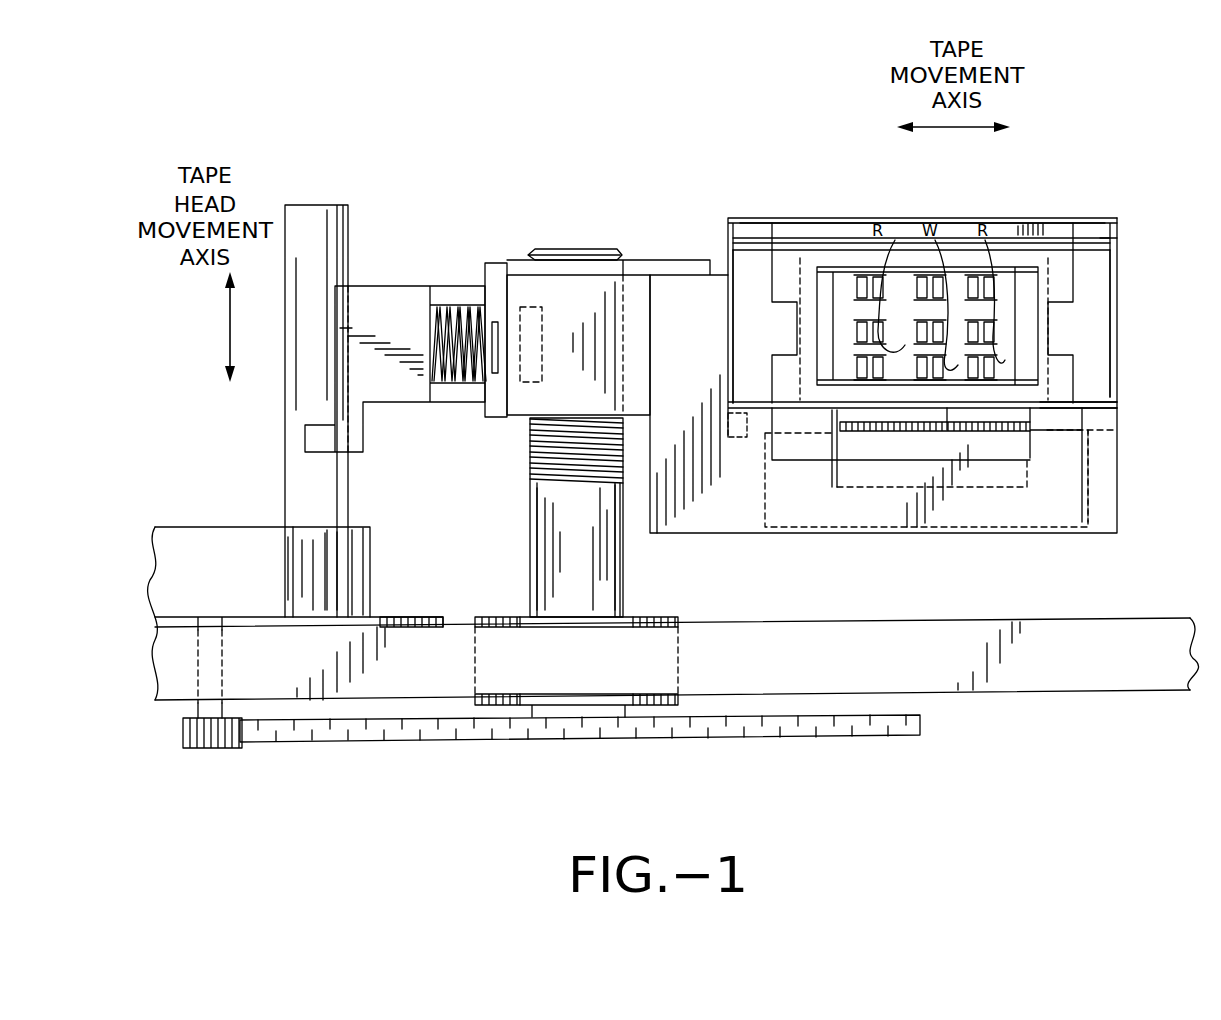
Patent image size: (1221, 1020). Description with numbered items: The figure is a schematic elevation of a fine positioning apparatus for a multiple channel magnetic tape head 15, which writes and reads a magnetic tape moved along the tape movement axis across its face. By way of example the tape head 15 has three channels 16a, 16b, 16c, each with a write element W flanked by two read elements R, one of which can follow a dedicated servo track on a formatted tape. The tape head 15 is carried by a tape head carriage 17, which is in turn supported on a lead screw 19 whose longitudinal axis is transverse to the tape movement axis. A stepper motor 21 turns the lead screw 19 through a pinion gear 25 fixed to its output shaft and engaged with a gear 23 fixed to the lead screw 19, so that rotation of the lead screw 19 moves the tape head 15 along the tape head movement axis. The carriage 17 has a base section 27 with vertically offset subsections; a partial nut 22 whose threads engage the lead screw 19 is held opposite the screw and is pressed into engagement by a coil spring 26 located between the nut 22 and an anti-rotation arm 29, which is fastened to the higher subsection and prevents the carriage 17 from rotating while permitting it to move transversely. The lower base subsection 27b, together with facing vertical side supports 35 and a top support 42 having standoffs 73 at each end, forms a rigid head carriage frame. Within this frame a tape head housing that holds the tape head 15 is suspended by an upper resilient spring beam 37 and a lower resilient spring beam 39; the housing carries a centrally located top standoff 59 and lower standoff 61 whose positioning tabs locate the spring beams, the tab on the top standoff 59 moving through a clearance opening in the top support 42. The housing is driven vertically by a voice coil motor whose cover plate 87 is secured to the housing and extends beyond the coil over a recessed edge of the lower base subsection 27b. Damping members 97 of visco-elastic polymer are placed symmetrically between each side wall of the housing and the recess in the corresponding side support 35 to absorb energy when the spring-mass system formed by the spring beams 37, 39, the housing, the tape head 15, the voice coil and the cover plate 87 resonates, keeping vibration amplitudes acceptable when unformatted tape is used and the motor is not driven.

The multiple channel magnetic tape head 15 is at (1010, 326).
The channel 16a is at (857, 367).
The channel 16b is at (857, 335).
The channel 16c is at (857, 290).
The tape head carriage 17 is at (1028, 198).
The lead screw 19 is at (587, 248).
The stepper motor 21 is at (200, 538).
The partial nut 22 is at (495, 314).
The gear 23 is at (923, 728).
The pinion gear 25 is at (210, 749).
The coil spring 26 is at (468, 386).
The base section 27 is at (489, 387).
The lower base subsection 27b is at (873, 507).
The anti-rotation arm 29 is at (396, 286).
The vertical side support 35 is at (735, 313).
The upper resilient spring beam 37 is at (1110, 257).
The lower resilient spring beam 39 is at (1107, 400).
The top support 42 is at (1049, 210).
The top standoff 59 is at (920, 280).
The lower standoff 61 is at (923, 402).
The standoff 73 is at (758, 240).
The cover plate 87 is at (993, 420).
The damping member 97 is at (786, 338).